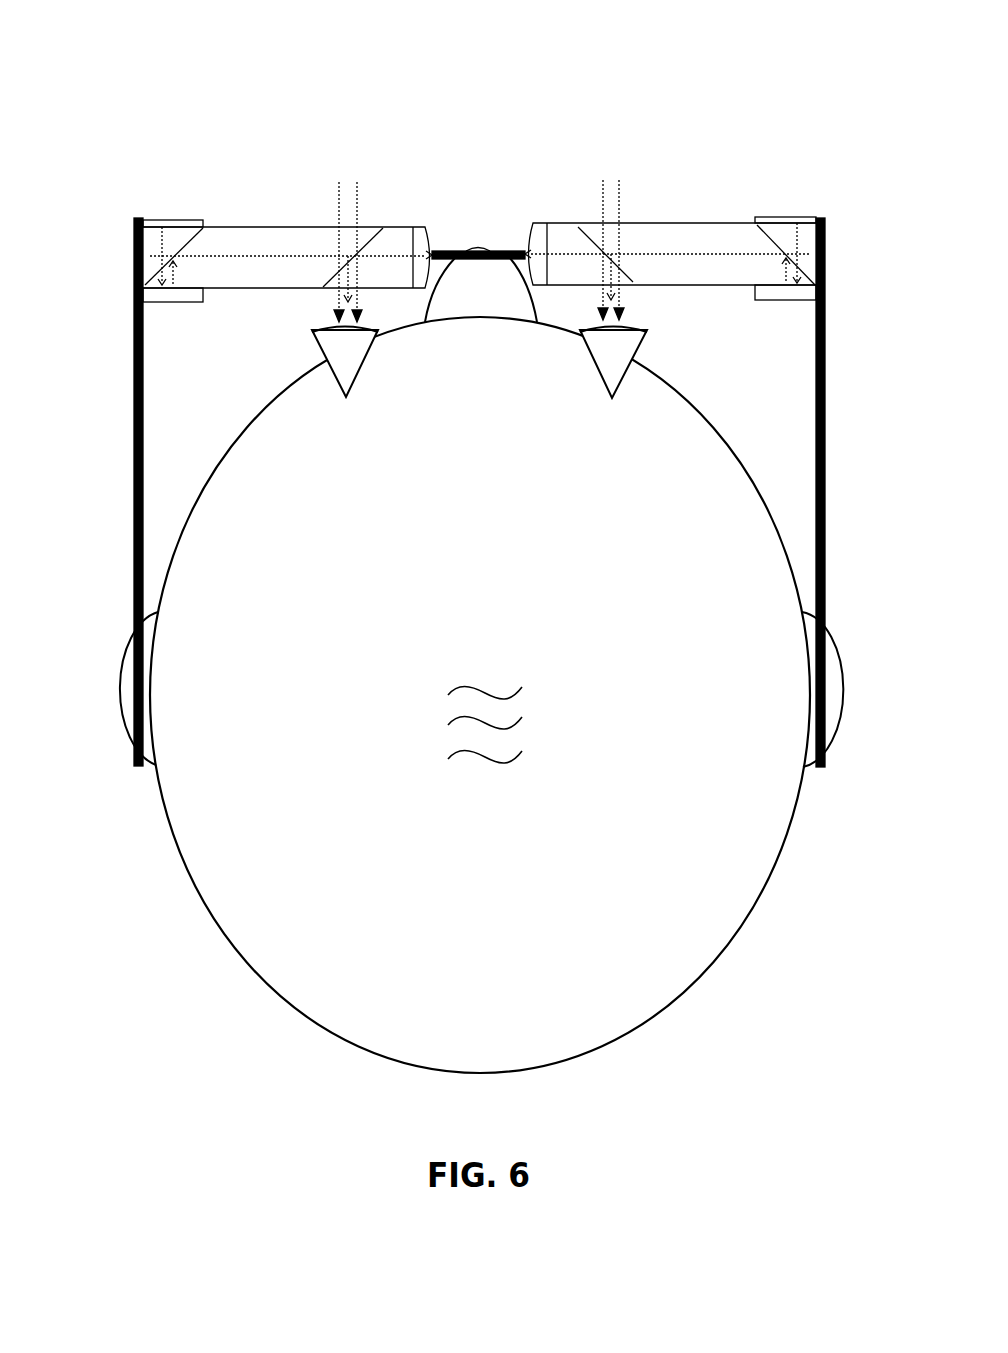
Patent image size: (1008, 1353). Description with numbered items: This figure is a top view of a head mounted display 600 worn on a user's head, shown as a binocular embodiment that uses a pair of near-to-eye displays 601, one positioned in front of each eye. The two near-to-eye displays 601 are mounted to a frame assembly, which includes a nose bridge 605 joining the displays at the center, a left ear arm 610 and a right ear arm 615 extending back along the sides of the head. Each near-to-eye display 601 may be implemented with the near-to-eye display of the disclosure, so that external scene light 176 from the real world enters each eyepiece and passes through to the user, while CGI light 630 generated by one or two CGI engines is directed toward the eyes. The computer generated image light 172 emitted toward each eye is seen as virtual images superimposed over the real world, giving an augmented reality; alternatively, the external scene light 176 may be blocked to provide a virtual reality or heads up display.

The head mounted display 600 is at (762, 75).
The near-to-eye display 601 is at (183, 186).
The nose bridge 605 is at (512, 250).
The left ear arm 610 is at (134, 493).
The right ear arm 615 is at (825, 490).
The external scene light 176 is at (339, 183).
The CGI light 630 is at (337, 283).
The computer generated image light 172 is at (356, 388).